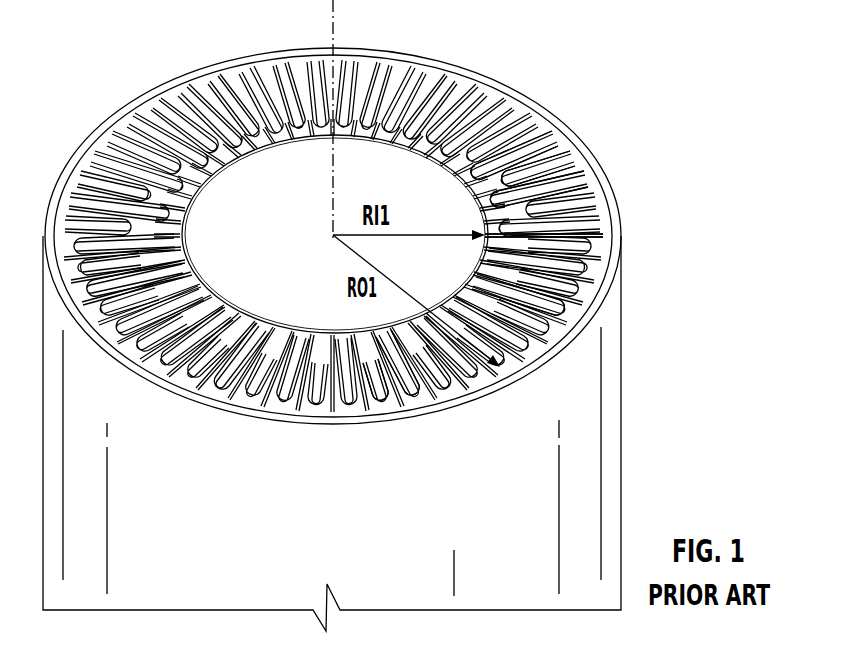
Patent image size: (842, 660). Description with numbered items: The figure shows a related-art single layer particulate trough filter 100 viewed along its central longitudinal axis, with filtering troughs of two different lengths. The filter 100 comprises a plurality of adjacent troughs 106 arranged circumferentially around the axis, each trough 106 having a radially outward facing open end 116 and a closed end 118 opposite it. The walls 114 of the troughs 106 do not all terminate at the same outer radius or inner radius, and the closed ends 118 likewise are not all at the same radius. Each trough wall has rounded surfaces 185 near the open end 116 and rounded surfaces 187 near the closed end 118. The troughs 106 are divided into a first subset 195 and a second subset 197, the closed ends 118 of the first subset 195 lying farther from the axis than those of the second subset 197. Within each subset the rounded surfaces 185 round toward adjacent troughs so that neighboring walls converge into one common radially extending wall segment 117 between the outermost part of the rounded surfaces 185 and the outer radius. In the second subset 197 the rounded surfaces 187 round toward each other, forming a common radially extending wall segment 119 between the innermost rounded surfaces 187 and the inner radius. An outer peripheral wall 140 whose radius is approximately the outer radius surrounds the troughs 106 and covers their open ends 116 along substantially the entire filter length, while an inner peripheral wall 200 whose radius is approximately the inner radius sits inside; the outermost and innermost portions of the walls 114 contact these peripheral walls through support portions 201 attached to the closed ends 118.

The particulate trough filter 100 is at (155, 52).
The trough 106 is at (614, 258).
The walls of the troughs 114 is at (540, 128).
The open end 116 is at (600, 210).
The common radially extending wall segment 117 is at (590, 162).
The closed end 118 is at (490, 187).
The common radially extending wall segment 119 is at (433, 125).
The outer peripheral wall 140 is at (195, 398).
The rounded surfaces 185 is at (578, 306).
The rounded surfaces 187 is at (500, 255).
The first subset of troughs 195 is at (413, 403).
The second subset of troughs 197 is at (373, 408).
The inner peripheral wall 200 is at (297, 330).
The support portions 201 is at (547, 303).